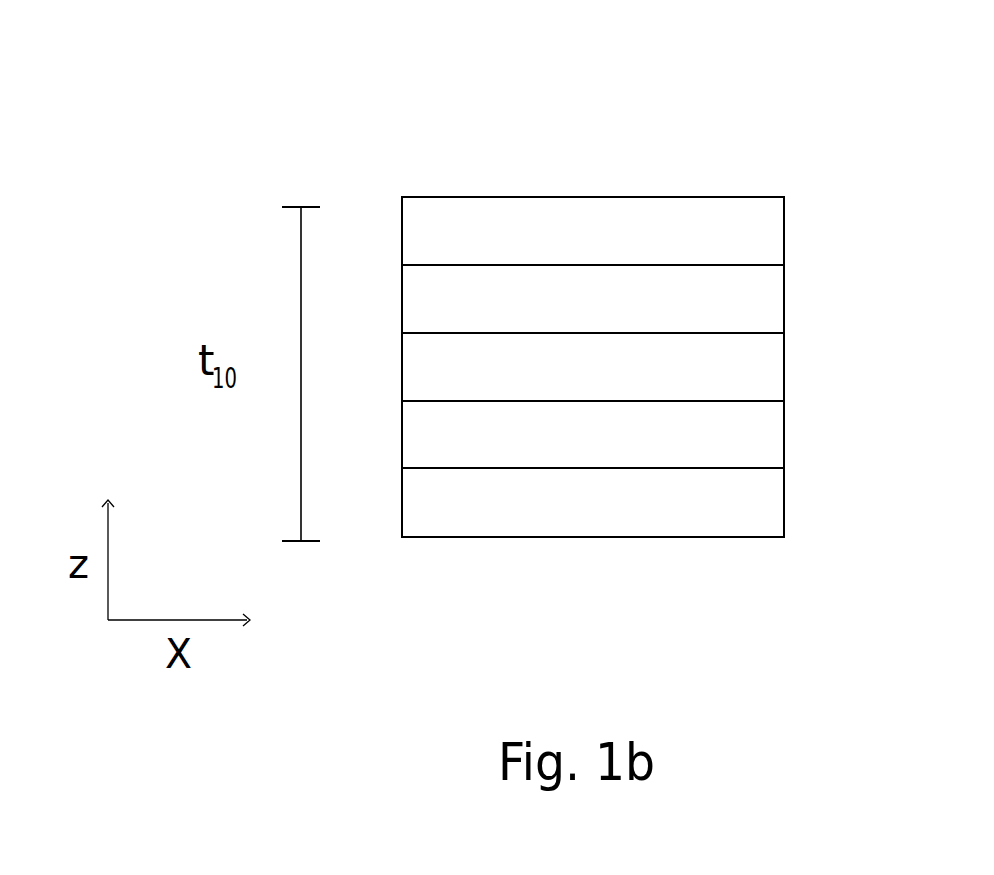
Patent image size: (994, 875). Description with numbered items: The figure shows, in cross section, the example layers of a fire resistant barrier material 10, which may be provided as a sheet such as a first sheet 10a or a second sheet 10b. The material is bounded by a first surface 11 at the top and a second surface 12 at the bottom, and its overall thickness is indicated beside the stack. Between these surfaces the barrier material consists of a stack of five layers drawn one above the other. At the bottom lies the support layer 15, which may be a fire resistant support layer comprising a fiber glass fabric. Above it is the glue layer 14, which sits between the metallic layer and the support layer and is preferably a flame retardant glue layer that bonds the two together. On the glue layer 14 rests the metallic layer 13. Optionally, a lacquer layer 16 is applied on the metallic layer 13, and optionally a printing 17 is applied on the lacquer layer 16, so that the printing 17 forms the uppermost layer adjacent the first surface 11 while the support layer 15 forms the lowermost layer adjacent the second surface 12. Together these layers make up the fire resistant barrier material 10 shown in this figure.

The fire resistant barrier material 10 is at (322, 110).
The first sheet of the fire resistant barrier material 10a is at (534, 351).
The second sheet of the fire resistant barrier material 10b is at (582, 351).
The first surface of the fire resistant barrier material 11 is at (580, 178).
The second surface of the fire resistant barrier material 12 is at (577, 563).
The metallic layer 13 is at (603, 390).
The glue layer 14 is at (603, 459).
The support layer 15 is at (603, 526).
The lacquer layer 16 is at (603, 319).
The printing 17 is at (603, 253).